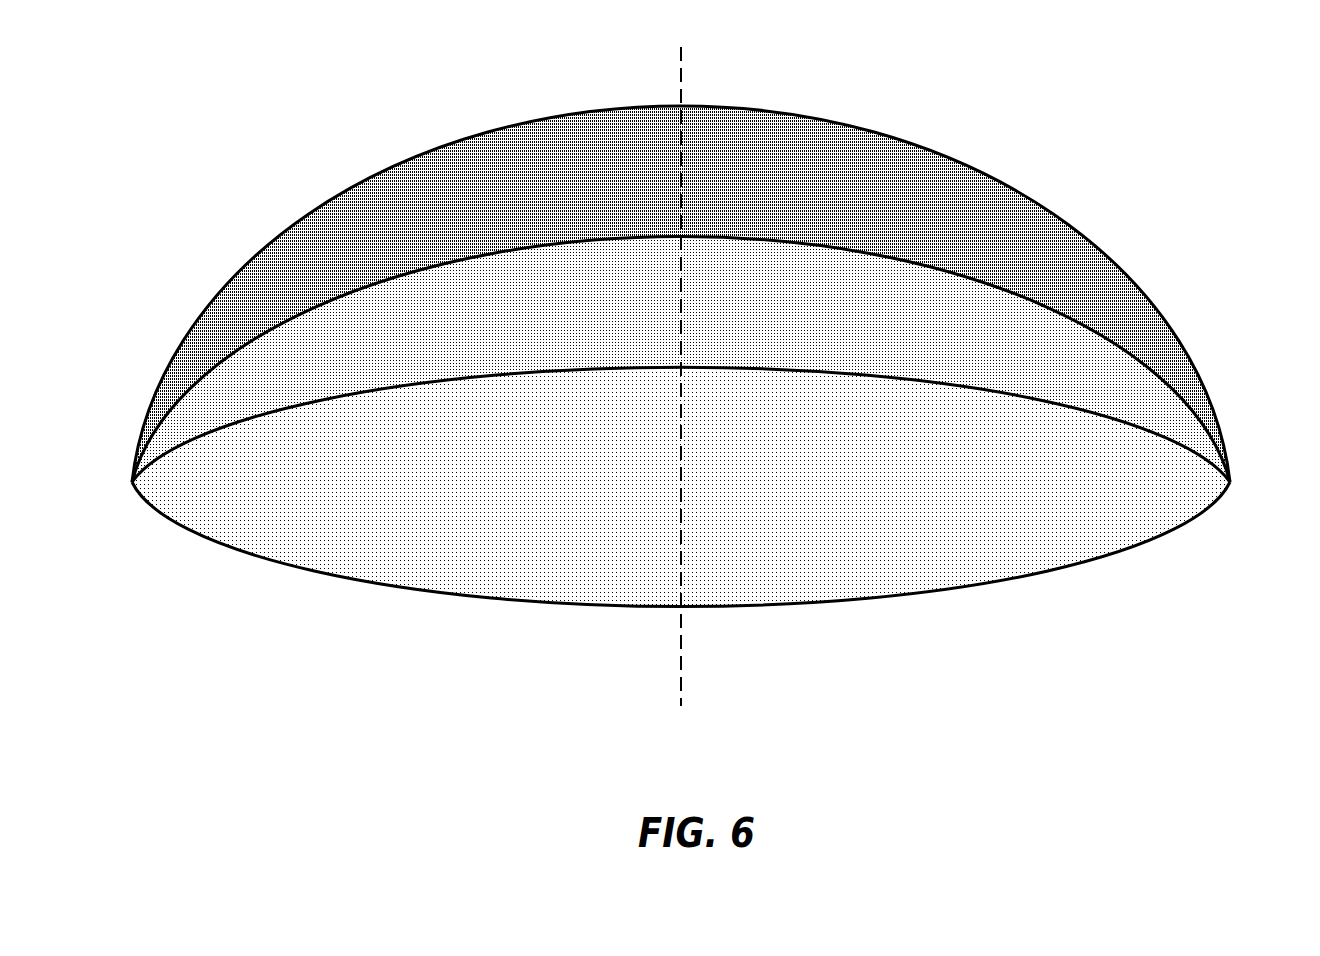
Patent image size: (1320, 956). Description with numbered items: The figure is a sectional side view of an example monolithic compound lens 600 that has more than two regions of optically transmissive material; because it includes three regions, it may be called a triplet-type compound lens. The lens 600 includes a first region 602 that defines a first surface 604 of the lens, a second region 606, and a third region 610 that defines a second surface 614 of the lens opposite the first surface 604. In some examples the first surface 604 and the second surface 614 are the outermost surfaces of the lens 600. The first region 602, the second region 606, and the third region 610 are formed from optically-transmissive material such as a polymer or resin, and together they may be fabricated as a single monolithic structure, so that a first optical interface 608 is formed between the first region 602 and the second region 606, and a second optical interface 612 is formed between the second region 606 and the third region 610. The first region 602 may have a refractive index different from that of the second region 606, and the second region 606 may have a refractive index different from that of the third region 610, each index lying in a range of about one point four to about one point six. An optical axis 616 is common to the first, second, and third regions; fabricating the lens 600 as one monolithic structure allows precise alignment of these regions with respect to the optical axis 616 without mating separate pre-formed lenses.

The monolithic compound lens 600 is at (702, 363).
The first region 602 is at (579, 510).
The first surface 604 is at (842, 607).
The second region 606 is at (579, 316).
The first optical interface 608 is at (827, 370).
The third region 610 is at (579, 192).
The second optical interface 612 is at (818, 247).
The second surface 614 is at (838, 121).
The optical axis 616 is at (682, 82).